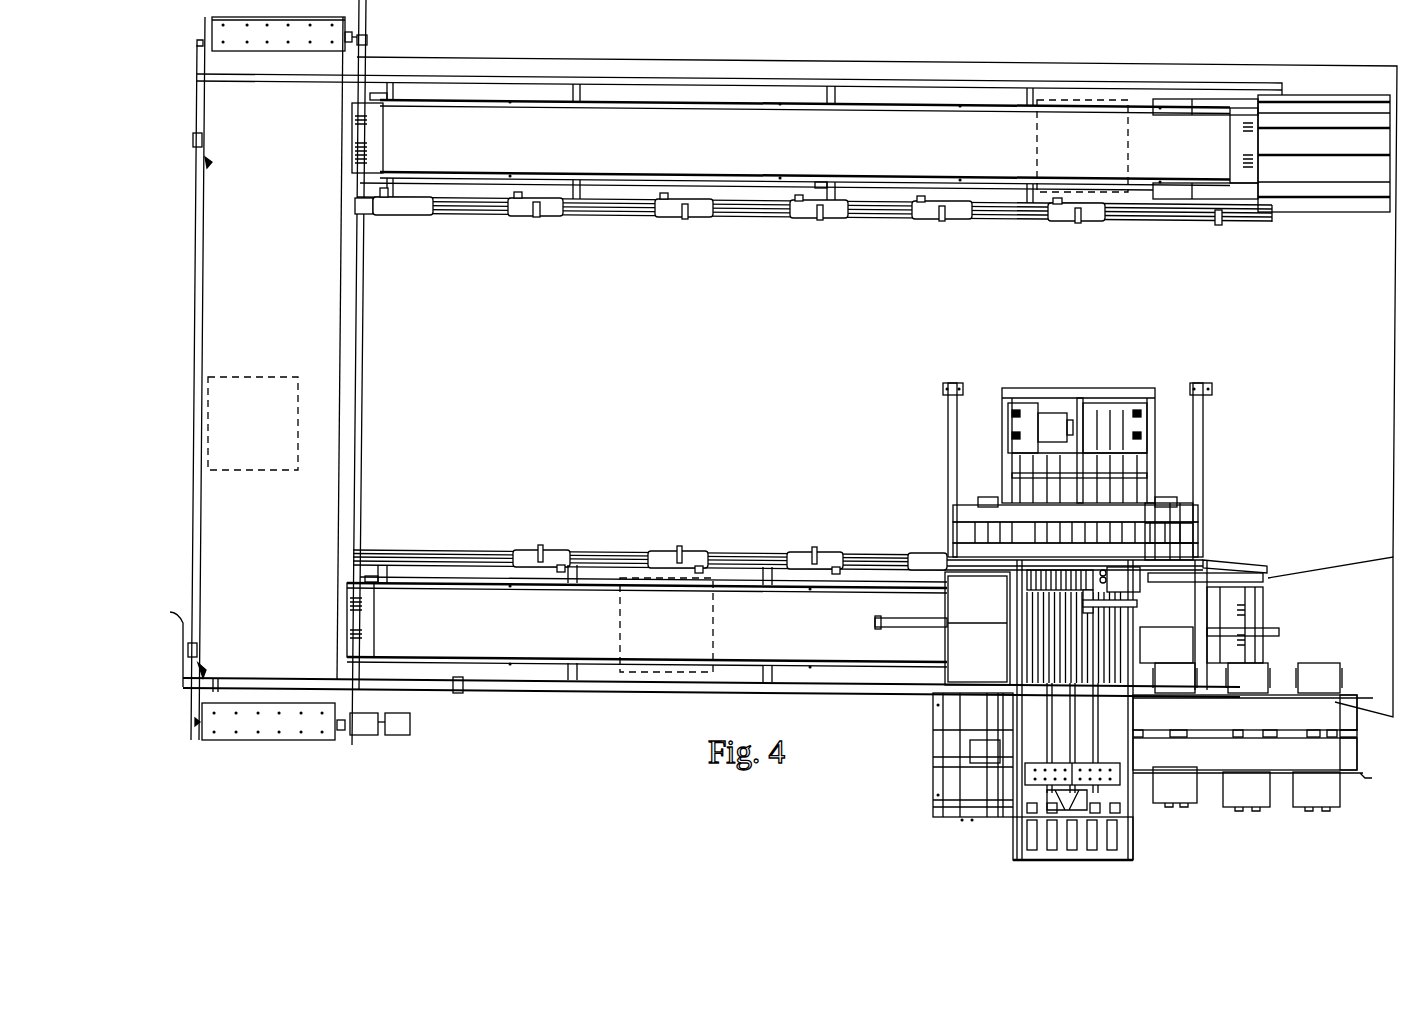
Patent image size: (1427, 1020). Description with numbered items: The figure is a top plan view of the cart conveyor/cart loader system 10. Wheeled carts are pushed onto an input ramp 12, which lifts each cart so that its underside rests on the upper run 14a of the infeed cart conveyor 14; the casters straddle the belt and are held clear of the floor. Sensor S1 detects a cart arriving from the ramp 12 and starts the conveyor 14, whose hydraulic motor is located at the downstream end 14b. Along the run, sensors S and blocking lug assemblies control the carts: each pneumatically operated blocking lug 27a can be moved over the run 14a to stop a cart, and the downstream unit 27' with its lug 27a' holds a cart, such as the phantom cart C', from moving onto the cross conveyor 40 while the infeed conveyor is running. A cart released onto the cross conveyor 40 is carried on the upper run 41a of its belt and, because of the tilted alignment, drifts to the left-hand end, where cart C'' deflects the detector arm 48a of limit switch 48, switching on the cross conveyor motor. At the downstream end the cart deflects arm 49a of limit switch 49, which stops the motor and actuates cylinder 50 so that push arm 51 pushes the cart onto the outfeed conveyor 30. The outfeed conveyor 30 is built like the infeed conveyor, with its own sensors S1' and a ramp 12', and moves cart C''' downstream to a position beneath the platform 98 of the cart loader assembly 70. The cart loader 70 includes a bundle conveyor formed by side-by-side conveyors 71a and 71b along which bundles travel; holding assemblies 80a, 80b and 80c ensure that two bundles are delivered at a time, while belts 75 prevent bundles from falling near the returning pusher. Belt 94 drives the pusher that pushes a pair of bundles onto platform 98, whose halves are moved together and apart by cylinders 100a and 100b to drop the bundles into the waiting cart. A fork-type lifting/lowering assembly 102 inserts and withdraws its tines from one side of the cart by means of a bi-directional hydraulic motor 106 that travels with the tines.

The cart conveyor/cart loader system 10 is at (662, 744).
The input ramp 12 is at (1324, 183).
The ramp 12' is at (1330, 607).
The cart conveyor 14 is at (762, 232).
The upper run 14a is at (820, 160).
The downstream end 14b is at (372, 168).
The downstream blocking lug unit 27' is at (483, 228).
The blocking lug 27a' is at (517, 247).
The blocking lug 27a is at (941, 250).
The sensor S is at (820, 220).
The sensor S1 is at (928, 259).
The sensor S1' is at (1092, 261).
The outfeed conveyor 30 is at (596, 697).
The cross conveyor 40 is at (365, 393).
The upper run 41a is at (300, 344).
The limit switch 48 is at (203, 138).
The detector arm 48a is at (209, 161).
The limit switch 49 is at (200, 640).
The limit switch arm 49a is at (205, 670).
The cylinder 50 is at (448, 695).
The push arm 51 is at (183, 593).
The cart loader assembly 70 is at (939, 462).
The conveyor 71a is at (1253, 716).
The conveyor 71b is at (1252, 758).
The belts 75 is at (1030, 858).
The holding assembly 80a is at (1341, 809).
The holding assembly 80b is at (1270, 811).
The holding assembly 80c is at (1201, 821).
The belt 94 is at (1070, 748).
The platform 98 is at (1003, 596).
The cylinder 100a is at (875, 622).
The cylinder 100b is at (1270, 628).
The fork-type lifting/lowering assembly 102 is at (1102, 382).
The hydraulic motor 106 is at (1047, 413).
The container (phantom) C' is at (1083, 115).
The cart C'' is at (256, 441).
The cart C''' is at (642, 593).